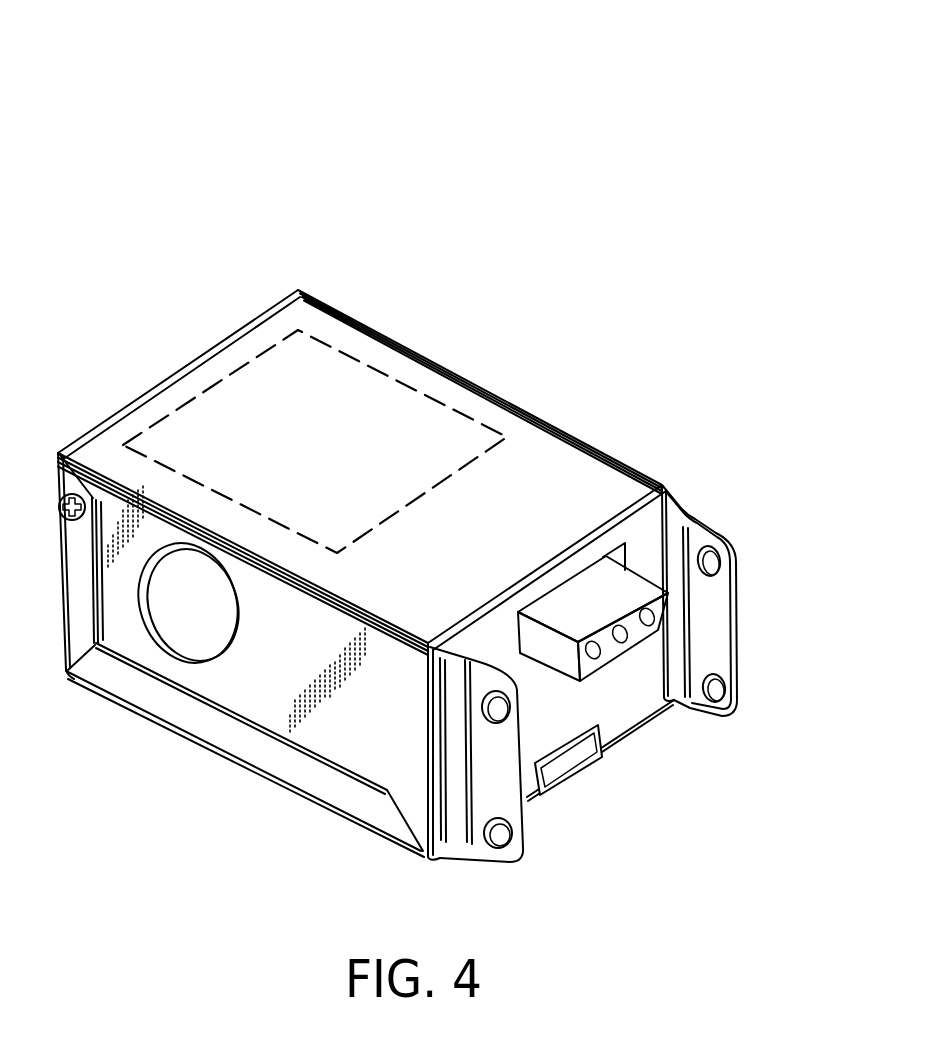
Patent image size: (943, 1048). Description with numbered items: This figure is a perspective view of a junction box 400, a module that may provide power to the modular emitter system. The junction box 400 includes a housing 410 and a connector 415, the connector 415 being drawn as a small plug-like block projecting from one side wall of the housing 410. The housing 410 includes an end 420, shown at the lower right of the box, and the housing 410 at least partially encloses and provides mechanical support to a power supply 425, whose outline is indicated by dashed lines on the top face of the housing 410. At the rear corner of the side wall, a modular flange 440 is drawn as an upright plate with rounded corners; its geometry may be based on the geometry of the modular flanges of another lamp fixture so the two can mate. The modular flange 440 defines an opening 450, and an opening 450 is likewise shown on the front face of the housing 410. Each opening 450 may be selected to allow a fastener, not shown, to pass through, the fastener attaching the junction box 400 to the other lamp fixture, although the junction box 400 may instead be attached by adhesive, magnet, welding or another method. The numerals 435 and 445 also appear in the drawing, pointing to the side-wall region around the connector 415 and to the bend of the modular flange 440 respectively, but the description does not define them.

The junction box 400 is at (185, 133).
The housing 410 is at (263, 707).
The connector 415 is at (622, 583).
The end 420 is at (645, 700).
The power supply 425 is at (394, 378).
The connector aperture 435 is at (617, 545).
The modular flange 440 is at (771, 583).
The bracket flange 445 is at (690, 514).
The opening 450 is at (177, 603).